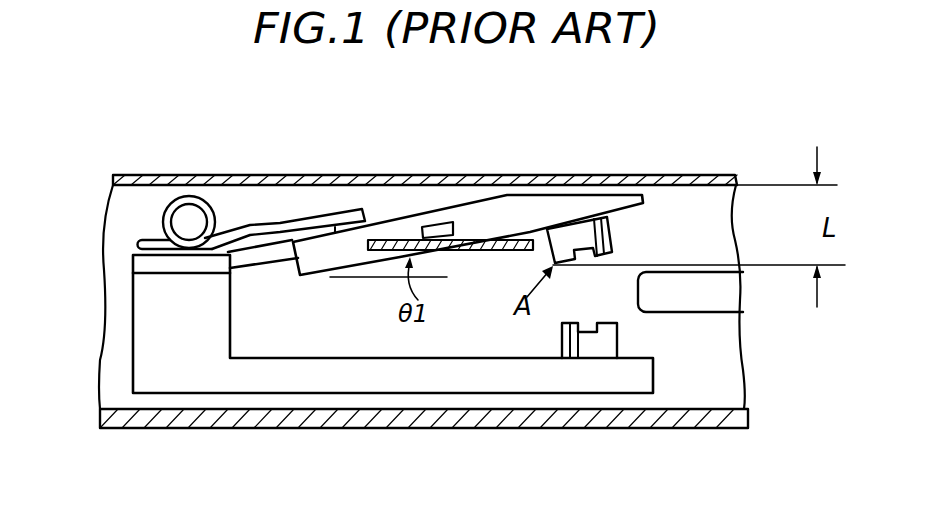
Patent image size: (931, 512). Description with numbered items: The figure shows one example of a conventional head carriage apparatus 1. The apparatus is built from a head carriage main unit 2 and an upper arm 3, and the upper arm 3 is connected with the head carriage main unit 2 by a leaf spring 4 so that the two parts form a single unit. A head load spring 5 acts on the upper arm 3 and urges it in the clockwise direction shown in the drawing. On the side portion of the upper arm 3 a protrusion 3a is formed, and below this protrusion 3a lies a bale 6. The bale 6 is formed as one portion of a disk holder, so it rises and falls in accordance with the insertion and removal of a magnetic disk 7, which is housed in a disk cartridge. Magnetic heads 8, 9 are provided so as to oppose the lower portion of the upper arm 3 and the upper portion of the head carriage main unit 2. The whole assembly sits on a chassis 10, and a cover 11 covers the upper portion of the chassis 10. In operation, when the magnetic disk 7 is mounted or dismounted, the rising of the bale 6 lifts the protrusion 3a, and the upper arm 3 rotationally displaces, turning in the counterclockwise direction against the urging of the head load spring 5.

The head carriage apparatus 1 is at (568, 96).
The head carriage main unit 2 is at (326, 378).
The upper arm 3 is at (547, 203).
The protrusion 3a is at (437, 223).
The leaf spring 4 is at (263, 265).
The head load spring 5 is at (293, 225).
The bale 6 is at (492, 251).
The magnetic disk 7 is at (728, 293).
The magnetic head 8 is at (610, 237).
The magnetic head 9 is at (607, 343).
The chassis 10 is at (578, 424).
The cover 11 is at (385, 175).